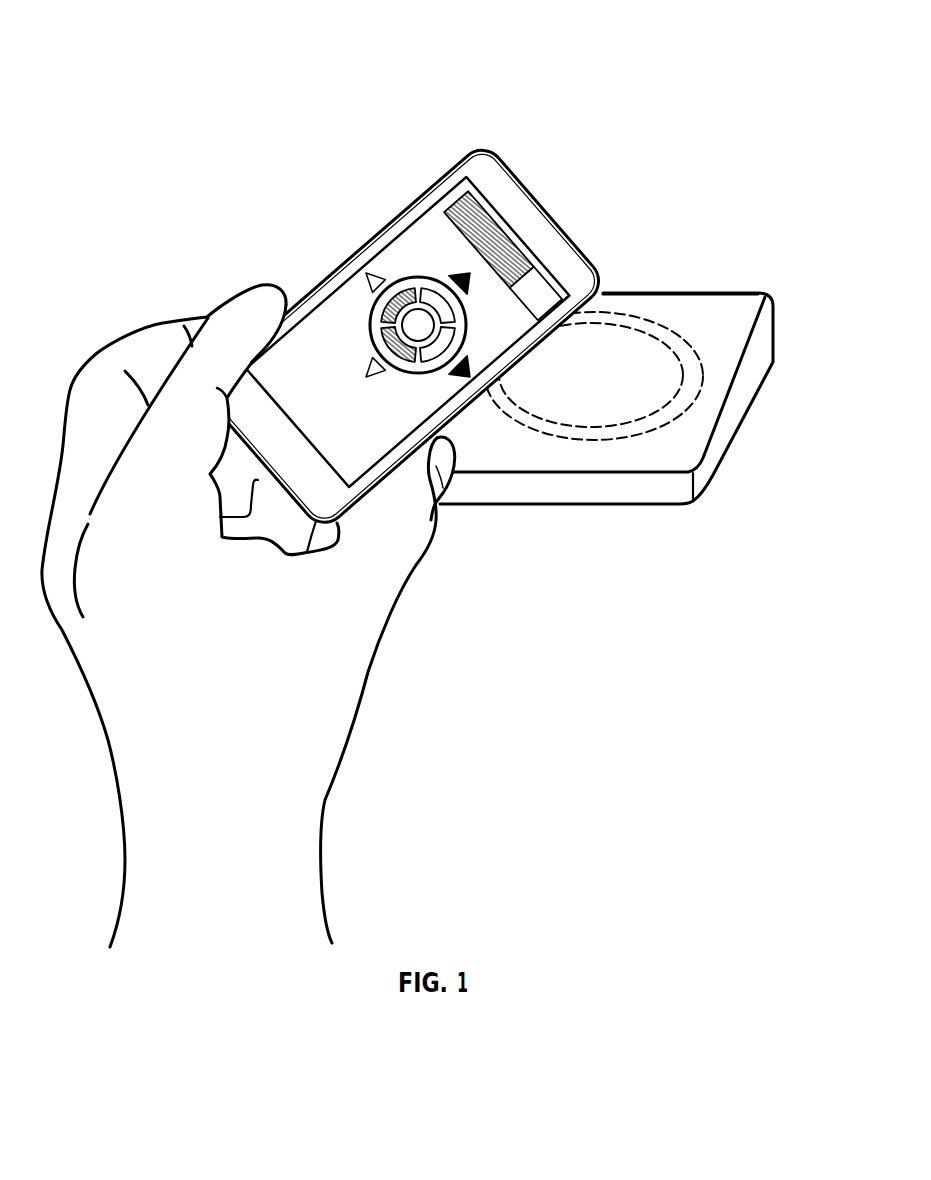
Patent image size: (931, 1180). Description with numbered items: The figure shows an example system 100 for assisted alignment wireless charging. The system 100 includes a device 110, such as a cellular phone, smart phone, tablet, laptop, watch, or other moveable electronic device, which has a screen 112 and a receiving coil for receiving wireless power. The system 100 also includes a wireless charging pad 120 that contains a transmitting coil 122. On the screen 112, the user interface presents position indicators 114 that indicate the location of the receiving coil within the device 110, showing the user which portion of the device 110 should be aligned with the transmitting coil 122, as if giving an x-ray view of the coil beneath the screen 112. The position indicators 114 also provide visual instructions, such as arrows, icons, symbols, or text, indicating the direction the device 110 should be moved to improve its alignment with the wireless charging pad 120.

The system 100 is at (760, 74).
The device 110 is at (403, 325).
The screen 112 is at (418, 221).
The position indicators 114 is at (371, 313).
The wireless charging pad 120 is at (626, 379).
The transmitting coil 122 is at (693, 401).